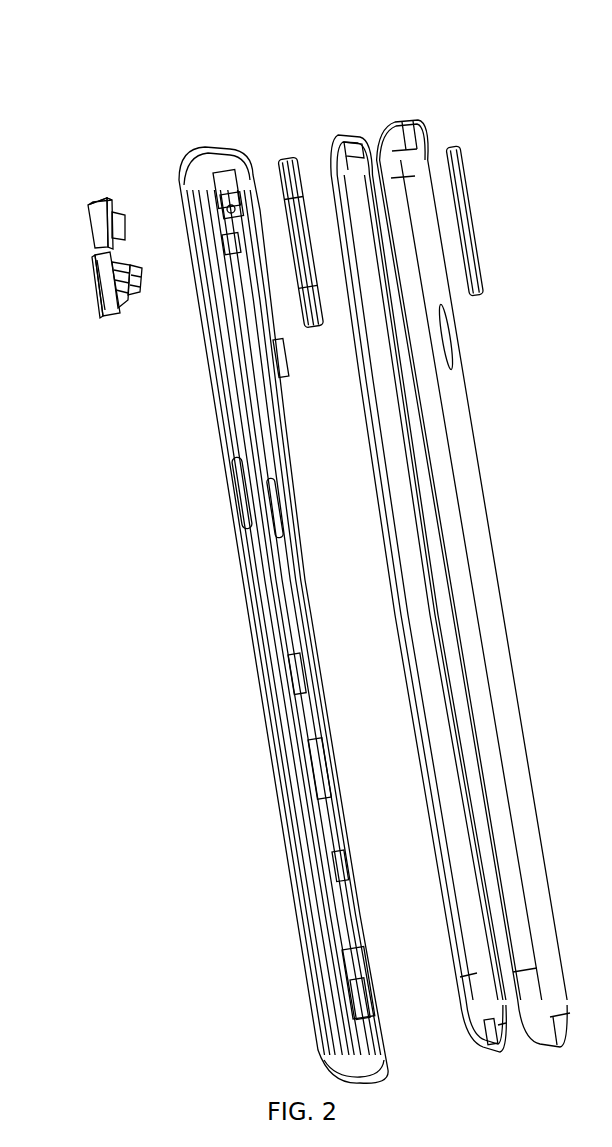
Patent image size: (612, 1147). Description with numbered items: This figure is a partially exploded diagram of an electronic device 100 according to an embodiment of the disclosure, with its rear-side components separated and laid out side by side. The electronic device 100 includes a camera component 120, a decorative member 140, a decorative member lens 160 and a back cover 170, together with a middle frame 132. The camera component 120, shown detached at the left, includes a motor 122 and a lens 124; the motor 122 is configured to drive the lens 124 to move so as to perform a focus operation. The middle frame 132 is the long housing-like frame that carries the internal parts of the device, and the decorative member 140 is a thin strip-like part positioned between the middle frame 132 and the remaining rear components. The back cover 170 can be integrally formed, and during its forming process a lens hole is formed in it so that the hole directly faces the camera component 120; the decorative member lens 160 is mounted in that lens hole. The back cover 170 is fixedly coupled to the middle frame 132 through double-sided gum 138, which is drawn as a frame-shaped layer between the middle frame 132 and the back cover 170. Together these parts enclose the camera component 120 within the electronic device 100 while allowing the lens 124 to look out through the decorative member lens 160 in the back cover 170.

The electronic device 100 is at (200, 26).
The camera component 120 is at (125, 253).
The motor 122 is at (130, 310).
The lens 124 is at (141, 296).
The middle frame 132 is at (200, 150).
The double-sided gum 138 is at (338, 132).
The decorative member 140 is at (280, 156).
The decorative member lens 160 is at (448, 146).
The back cover 170 is at (392, 122).